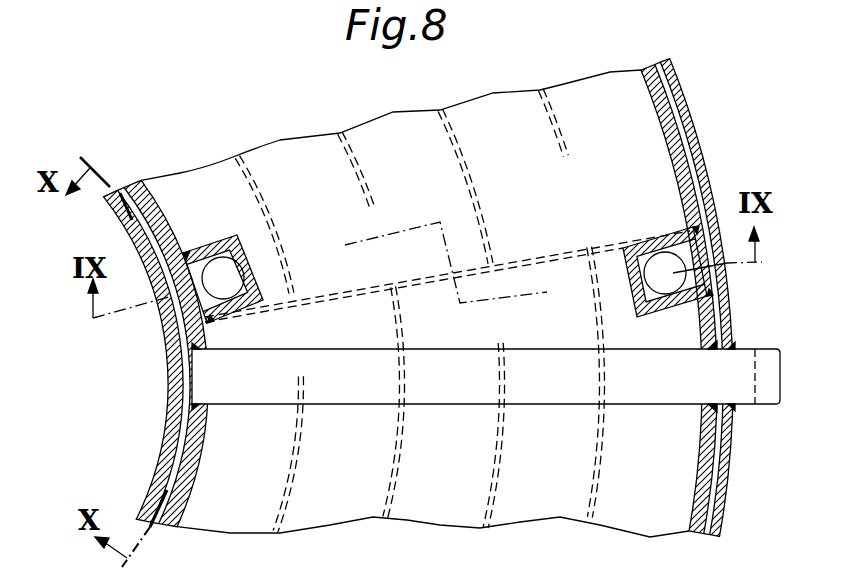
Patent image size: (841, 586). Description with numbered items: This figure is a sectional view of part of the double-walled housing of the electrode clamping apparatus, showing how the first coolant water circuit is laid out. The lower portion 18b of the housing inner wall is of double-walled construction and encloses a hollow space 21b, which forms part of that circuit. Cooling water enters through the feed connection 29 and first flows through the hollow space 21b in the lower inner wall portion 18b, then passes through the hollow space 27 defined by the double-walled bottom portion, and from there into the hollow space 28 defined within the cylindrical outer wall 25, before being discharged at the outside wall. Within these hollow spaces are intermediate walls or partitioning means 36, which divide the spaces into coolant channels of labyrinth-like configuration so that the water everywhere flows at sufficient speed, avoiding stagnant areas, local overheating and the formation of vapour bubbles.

The lower wall portion of the inner wall 18b is at (158, 210).
The hollow space 21b is at (183, 398).
The cylindrical outer wall 25 is at (712, 188).
The hollow space 27 is at (490, 123).
The hollow space 28 is at (676, 119).
The feed connection 29 is at (767, 392).
The intermediate walls or partitioning means 36 is at (285, 252).